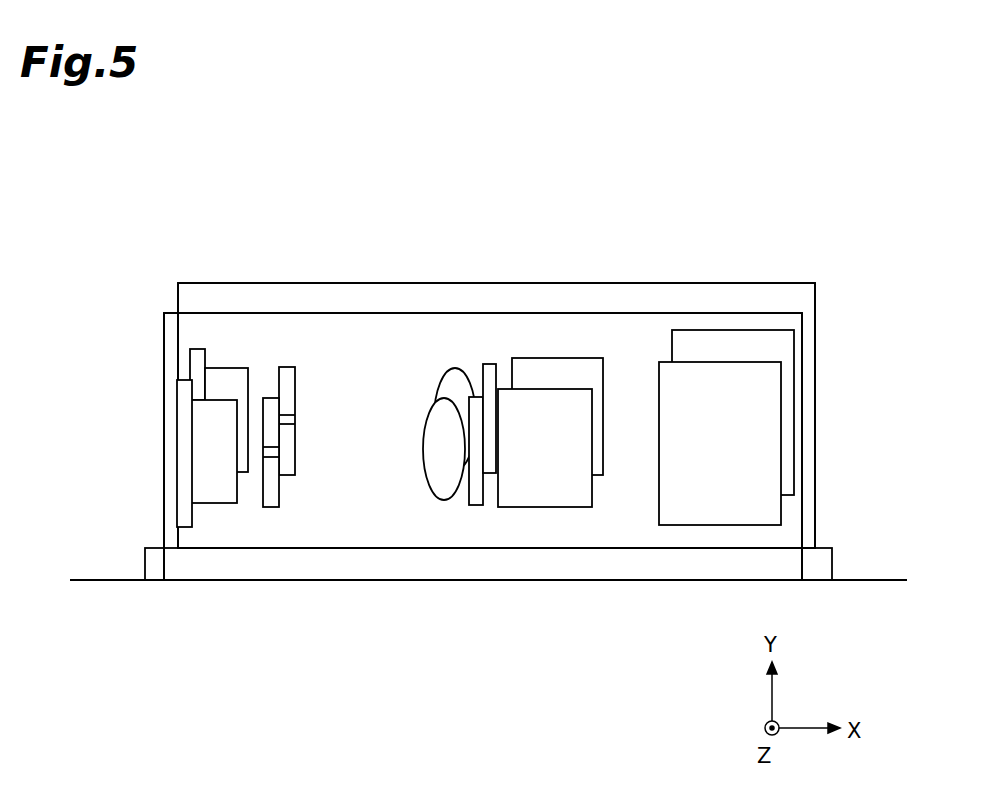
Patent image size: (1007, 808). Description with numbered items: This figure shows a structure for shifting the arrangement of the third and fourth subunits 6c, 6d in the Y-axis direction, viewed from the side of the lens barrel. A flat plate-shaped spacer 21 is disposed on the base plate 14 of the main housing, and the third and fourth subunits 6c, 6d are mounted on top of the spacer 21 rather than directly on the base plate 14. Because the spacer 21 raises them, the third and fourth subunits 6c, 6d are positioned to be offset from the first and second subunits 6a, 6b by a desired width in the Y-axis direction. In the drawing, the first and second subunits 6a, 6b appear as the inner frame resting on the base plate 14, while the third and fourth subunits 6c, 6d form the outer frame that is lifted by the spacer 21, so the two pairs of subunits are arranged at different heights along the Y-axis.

The first subunit 6a is at (163, 400).
The second subunit 6b is at (163, 400).
The third subunit 6c is at (815, 342).
The fourth subunit 6d is at (815, 342).
The spacer 21 is at (145, 562).
The base plate 14 is at (870, 580).